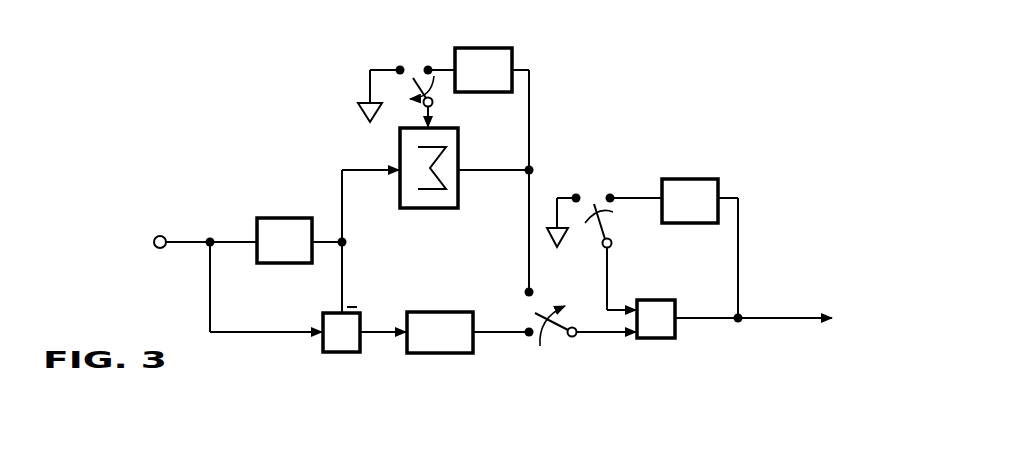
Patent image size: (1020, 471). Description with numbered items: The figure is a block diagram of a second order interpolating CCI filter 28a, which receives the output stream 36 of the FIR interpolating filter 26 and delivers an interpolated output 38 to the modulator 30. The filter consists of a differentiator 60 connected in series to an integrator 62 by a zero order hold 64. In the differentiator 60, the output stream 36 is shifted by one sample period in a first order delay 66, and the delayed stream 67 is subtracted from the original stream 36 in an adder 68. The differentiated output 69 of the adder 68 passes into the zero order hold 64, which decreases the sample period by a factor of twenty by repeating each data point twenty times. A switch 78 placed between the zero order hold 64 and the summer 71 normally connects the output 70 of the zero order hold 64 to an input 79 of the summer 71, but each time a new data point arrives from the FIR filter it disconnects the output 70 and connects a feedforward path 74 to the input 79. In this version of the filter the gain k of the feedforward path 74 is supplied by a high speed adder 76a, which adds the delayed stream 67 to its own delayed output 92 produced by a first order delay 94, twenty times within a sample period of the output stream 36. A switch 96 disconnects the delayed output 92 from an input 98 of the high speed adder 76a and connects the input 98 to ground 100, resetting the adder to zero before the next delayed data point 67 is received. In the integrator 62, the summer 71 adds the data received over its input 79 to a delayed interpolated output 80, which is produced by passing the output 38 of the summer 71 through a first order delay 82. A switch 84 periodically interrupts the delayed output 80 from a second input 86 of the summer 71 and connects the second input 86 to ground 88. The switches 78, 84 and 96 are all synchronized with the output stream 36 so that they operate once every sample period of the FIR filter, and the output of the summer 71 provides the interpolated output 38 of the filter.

The FIR interpolating filter 26 is at (101, 239).
The CCI filter 28a is at (796, 371).
The modulator 30 is at (845, 288).
The output stream of the FIR filter 36 is at (188, 247).
The interpolated output 38 is at (762, 321).
The differentiator 60 is at (247, 360).
The integrator 62 is at (681, 373).
The zero order hold 64 is at (446, 354).
The first order delay 66 is at (275, 218).
The delayed stream 67 is at (342, 278).
The adder 68 is at (342, 352).
The differentiated output 69 is at (375, 334).
The output of the zero order hold 70 is at (497, 334).
The summer 71 is at (678, 338).
The feedforward path 74 is at (378, 159).
The high speed adder 76a is at (430, 212).
The switch 78 is at (562, 340).
The input of the summer 79 is at (623, 341).
The delayed interpolated output 80 is at (635, 198).
The first order delay 82 is at (693, 179).
The switch 84 is at (594, 186).
The second input of the summer 86 is at (644, 286).
The ground 88 is at (557, 198).
The delayed output of the adder 92 is at (432, 69).
The first order delay 94 is at (490, 48).
The switch 96 is at (406, 52).
The input of the adder 98 is at (459, 106).
The ground 100 is at (370, 75).